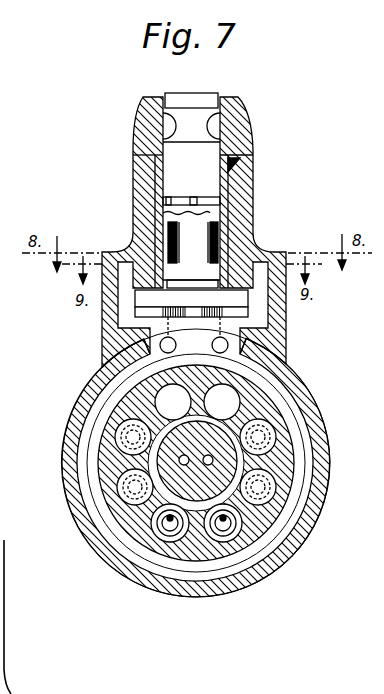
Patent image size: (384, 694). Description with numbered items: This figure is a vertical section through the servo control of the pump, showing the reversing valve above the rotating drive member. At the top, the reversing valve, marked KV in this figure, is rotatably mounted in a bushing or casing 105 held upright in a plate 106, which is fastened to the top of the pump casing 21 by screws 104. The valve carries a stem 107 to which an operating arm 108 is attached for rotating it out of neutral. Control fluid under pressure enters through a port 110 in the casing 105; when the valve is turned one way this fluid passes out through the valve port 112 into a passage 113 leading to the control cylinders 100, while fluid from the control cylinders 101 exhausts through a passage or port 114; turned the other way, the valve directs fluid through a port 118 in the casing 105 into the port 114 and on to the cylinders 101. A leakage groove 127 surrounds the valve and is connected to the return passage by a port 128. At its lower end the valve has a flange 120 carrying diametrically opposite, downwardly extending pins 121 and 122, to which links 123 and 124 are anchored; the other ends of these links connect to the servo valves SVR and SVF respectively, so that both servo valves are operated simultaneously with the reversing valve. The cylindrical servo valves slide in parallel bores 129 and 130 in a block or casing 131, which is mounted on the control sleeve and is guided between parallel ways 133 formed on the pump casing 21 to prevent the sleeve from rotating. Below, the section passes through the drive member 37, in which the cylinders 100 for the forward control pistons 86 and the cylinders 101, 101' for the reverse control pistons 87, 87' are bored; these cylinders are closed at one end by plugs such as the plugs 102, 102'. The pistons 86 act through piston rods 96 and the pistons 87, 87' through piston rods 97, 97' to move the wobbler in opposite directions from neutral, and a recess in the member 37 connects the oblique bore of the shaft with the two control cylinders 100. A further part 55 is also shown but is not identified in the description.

The stem 107 is at (240, 130).
The operating arm 108 is at (240, 100).
The plate 106 is at (210, 150).
The bushing or casing 105 is at (247, 163).
The valve chamber KV is at (251, 205).
The passage 113 is at (220, 236).
The valve port 112 is at (262, 247).
The leakage groove 127 is at (153, 186).
The passage or port 114 is at (136, 232).
The port 128 is at (194, 200).
The port 118 is at (156, 238).
The block or casing 131 is at (191, 299).
The bore 130 is at (200, 309).
The bore 129 is at (212, 346).
The link 123 is at (136, 305).
The pin 121 is at (130, 329).
The parallel ways 133 is at (102, 338).
The flange 120 is at (248, 300).
The link 124 is at (250, 312).
The pin 122 is at (296, 336).
The servo valve SVR is at (143, 362).
The servo valve SVF is at (262, 350).
The port 110 is at (117, 543).
The piston rods 96 is at (283, 418).
The plugs 102 is at (228, 463).
The rotor body portion 102' is at (299, 379).
The pump casing 21 is at (288, 455).
The cylinders 100 is at (332, 495).
The cylinders 101 is at (87, 442).
The piston bearing 101' is at (231, 559).
The control pistons 86 is at (276, 437).
The control pistons 87 is at (149, 471).
The bearing 87' is at (173, 562).
The piston rods 97 is at (85, 457).
The cylinder 97' is at (129, 568).
The rotor 55 is at (152, 532).
The drive member 37 is at (255, 553).
The screws 104 is at (6, 645).